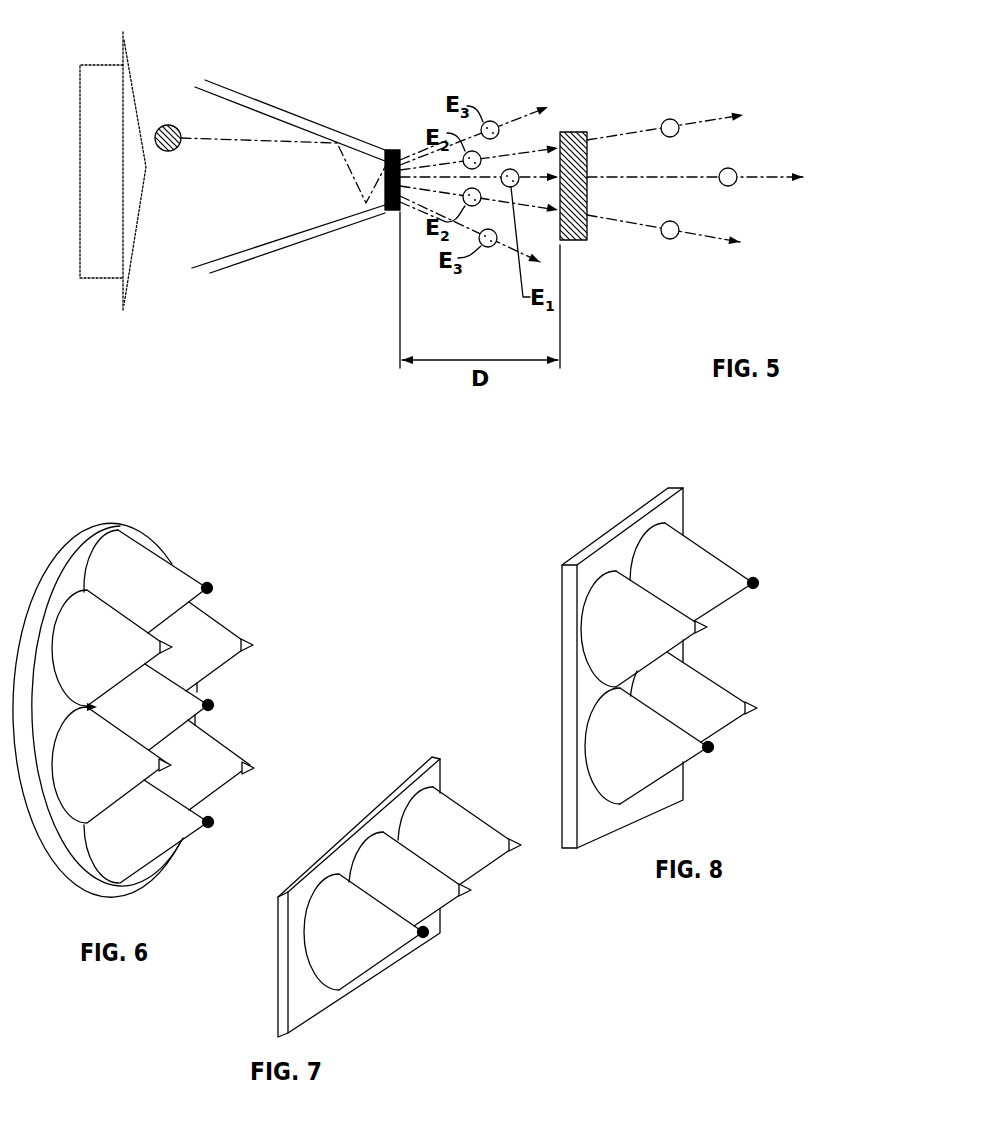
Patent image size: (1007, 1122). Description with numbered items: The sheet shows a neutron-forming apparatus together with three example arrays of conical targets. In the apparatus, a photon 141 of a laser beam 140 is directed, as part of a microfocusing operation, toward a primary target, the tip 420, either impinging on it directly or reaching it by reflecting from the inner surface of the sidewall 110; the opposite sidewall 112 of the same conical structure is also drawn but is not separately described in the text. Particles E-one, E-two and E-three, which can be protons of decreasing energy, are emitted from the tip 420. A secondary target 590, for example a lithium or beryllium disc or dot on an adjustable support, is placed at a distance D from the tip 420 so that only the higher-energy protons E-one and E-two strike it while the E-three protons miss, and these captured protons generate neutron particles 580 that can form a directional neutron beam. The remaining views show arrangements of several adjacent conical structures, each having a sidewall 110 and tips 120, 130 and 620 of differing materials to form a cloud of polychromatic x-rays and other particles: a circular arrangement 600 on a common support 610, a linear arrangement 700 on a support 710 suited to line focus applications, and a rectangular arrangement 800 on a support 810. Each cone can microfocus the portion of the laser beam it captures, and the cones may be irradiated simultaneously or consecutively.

In FIG. 5, the sidewall 110 is at (265, 100).
In FIG. 6, the sidewall 110 is at (184, 572).
In FIG. 7, the sidewall 110 is at (467, 809).
In FIG. 8, the sidewall 110 is at (701, 546).
In FIG. 5, the second optical fiber 112 is at (242, 250).
In FIG. 6, the tip 120 is at (212, 586).
In FIG. 7, the tip 120 is at (427, 936).
In FIG. 8, the tip 120 is at (758, 580).
In FIG. 6, the tip 130 is at (172, 645).
In FIG. 7, the tip 130 is at (520, 849).
In FIG. 8, the tip 130 is at (758, 705).
In FIG. 5, the laser beam 140 is at (113, 171).
In FIG. 5, the photon 141 is at (174, 148).
In FIG. 5, the tip 420 is at (390, 150).
In FIG. 5, the neutron particles 580 is at (733, 170).
In FIG. 5, the target 590 is at (573, 240).
In FIG. 6, the circular arrangement 600 is at (89, 507).
In FIG. 6, the common support 610 is at (146, 529).
In FIG. 6, the tip 620 is at (252, 645).
In FIG. 7, the tip 620 is at (469, 894).
In FIG. 8, the tip 620 is at (706, 631).
In FIG. 7, the linear arrangement 700 is at (365, 1005).
In FIG. 7, the support 710 is at (443, 763).
In FIG. 8, the rectangular arrangement 800 is at (566, 535).
In FIG. 8, the support 810 is at (560, 622).